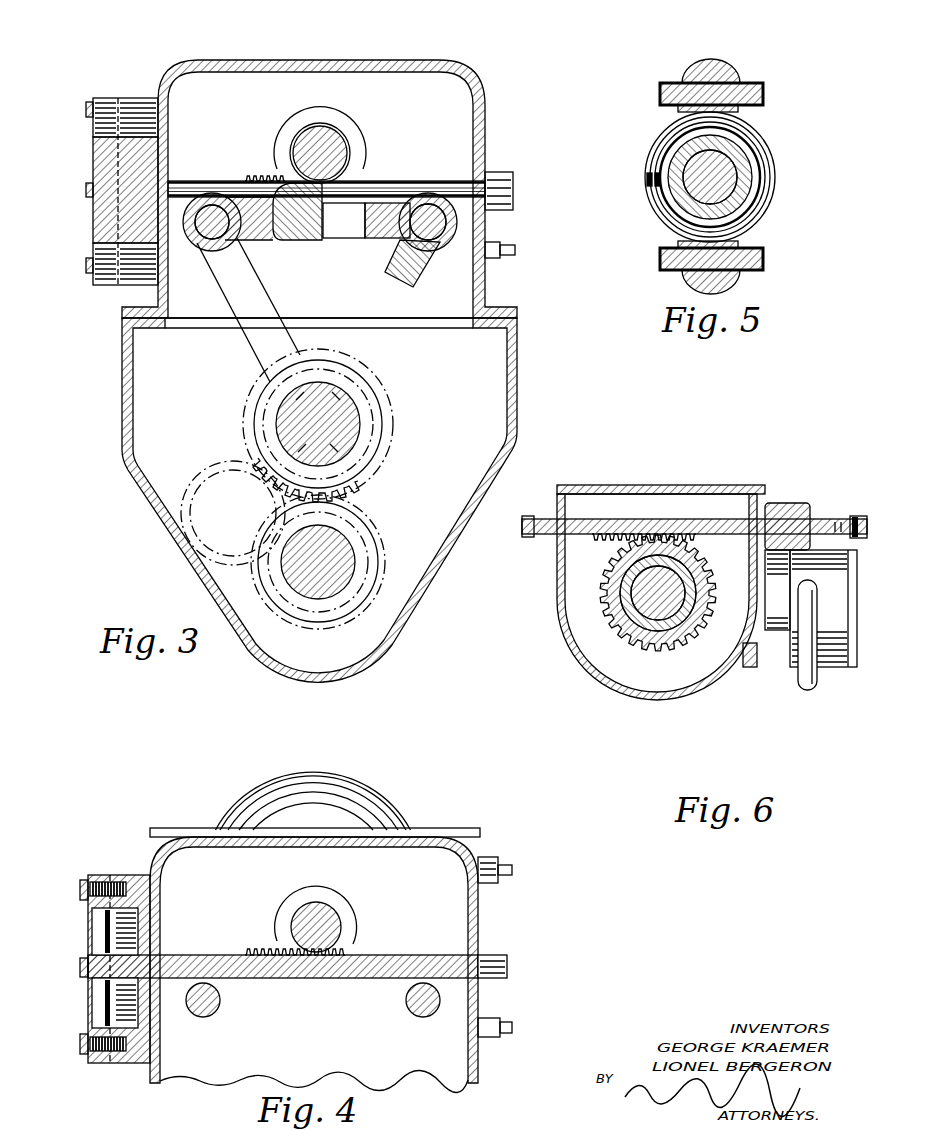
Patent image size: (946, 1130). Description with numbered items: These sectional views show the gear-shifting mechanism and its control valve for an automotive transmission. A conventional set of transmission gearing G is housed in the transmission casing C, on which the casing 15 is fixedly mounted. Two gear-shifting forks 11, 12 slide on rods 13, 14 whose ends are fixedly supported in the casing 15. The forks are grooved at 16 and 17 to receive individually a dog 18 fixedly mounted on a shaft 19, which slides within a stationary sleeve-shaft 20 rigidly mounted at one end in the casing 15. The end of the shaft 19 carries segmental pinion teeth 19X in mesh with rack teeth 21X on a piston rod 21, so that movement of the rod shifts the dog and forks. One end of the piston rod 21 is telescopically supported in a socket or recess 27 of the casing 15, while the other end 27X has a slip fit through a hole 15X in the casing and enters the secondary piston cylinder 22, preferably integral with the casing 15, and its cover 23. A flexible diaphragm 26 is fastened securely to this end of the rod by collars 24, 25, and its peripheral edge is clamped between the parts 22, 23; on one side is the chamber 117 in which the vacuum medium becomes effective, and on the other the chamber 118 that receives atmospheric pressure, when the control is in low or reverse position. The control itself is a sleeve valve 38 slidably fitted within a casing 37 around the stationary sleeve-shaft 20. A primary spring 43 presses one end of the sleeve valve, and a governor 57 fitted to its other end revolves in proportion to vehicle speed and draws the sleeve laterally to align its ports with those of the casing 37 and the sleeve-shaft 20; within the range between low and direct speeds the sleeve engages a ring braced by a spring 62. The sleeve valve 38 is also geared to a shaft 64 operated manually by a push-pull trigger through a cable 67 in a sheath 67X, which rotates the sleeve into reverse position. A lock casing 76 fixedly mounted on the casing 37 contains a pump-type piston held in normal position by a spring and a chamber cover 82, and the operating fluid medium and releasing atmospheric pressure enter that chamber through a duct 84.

In FIG. 3, the gear-shifting fork 11 is at (230, 277).
In FIG. 3, the gear-shifting fork 12 is at (424, 263).
In FIG. 3, the rod 13 is at (203, 241).
In FIG. 4, the rod 13 is at (220, 998).
In FIG. 3, the rod 14 is at (433, 236).
In FIG. 4, the rod 14 is at (407, 1000).
In FIG. 3, the casing 15 is at (484, 148).
In FIG. 4, the casing 15 is at (480, 931).
In FIG. 4, the hole 15X is at (156, 957).
In FIG. 3, the groove 16 is at (280, 241).
In FIG. 3, the groove 17 is at (343, 231).
In FIG. 3, the dog 18 is at (302, 240).
In FIG. 3, the shaft 19 is at (350, 160).
In FIG. 5, the shaft 19 is at (750, 178).
In FIG. 6, the shaft 19 is at (622, 600).
In FIG. 4, the shaft 19 is at (318, 919).
In FIG. 4, the segmental pinion teeth 19X is at (284, 941).
In FIG. 3, the stationary sleeve-shaft 20 is at (333, 125).
In FIG. 5, the stationary sleeve-shaft 20 is at (762, 199).
In FIG. 6, the stationary sleeve-shaft 20 is at (636, 616).
In FIG. 4, the stationary sleeve-shaft 20 is at (343, 910).
In FIG. 3, the piston rod 21 is at (440, 188).
In FIG. 4, the piston rod 21 is at (435, 960).
In FIG. 3, the rack teeth 21X is at (271, 180).
In FIG. 4, the rack teeth 21X is at (252, 956).
In FIG. 3, the secondary piston cylinder 22 is at (133, 103).
In FIG. 4, the secondary piston cylinder 22 is at (152, 878).
In FIG. 3, the secondary piston cylinder cover 23 is at (118, 100).
In FIG. 4, the secondary piston cylinder cover 23 is at (110, 878).
In FIG. 4, the collar 24 is at (94, 928).
In FIG. 4, the collar 25 is at (114, 1006).
In FIG. 3, the flexible diaphragm 26 is at (118, 286).
In FIG. 4, the flexible diaphragm 26 is at (120, 1063).
In FIG. 3, the socket or recess 27 is at (498, 211).
In FIG. 4, the socket or recess 27 is at (493, 980).
In FIG. 4, the piston rod end 27X is at (141, 957).
In FIG. 6, the casing 37 is at (615, 686).
In FIG. 6, the sleeve valve 38 is at (646, 634).
In FIG. 5, the primary spring 43 is at (652, 149).
In FIG. 5, the governor 57 is at (716, 60).
In FIG. 5, the spring 62 is at (656, 190).
In FIG. 6, the shaft 64 is at (548, 518).
In FIG. 4, the shaft 64 is at (488, 857).
In FIG. 6, the cable 67 is at (862, 520).
In FIG. 6, the sheath 67X is at (832, 515).
In FIG. 6, the casing 76 is at (783, 632).
In FIG. 6, the chamber cover 82 is at (853, 667).
In FIG. 6, the duct 84 is at (798, 677).
In FIG. 4, the chamber 117 is at (94, 910).
In FIG. 4, the chamber 118 is at (138, 1020).
In FIG. 3, the transmission casing C is at (519, 420).
In FIG. 3, the set of transmission gearing G is at (380, 505).